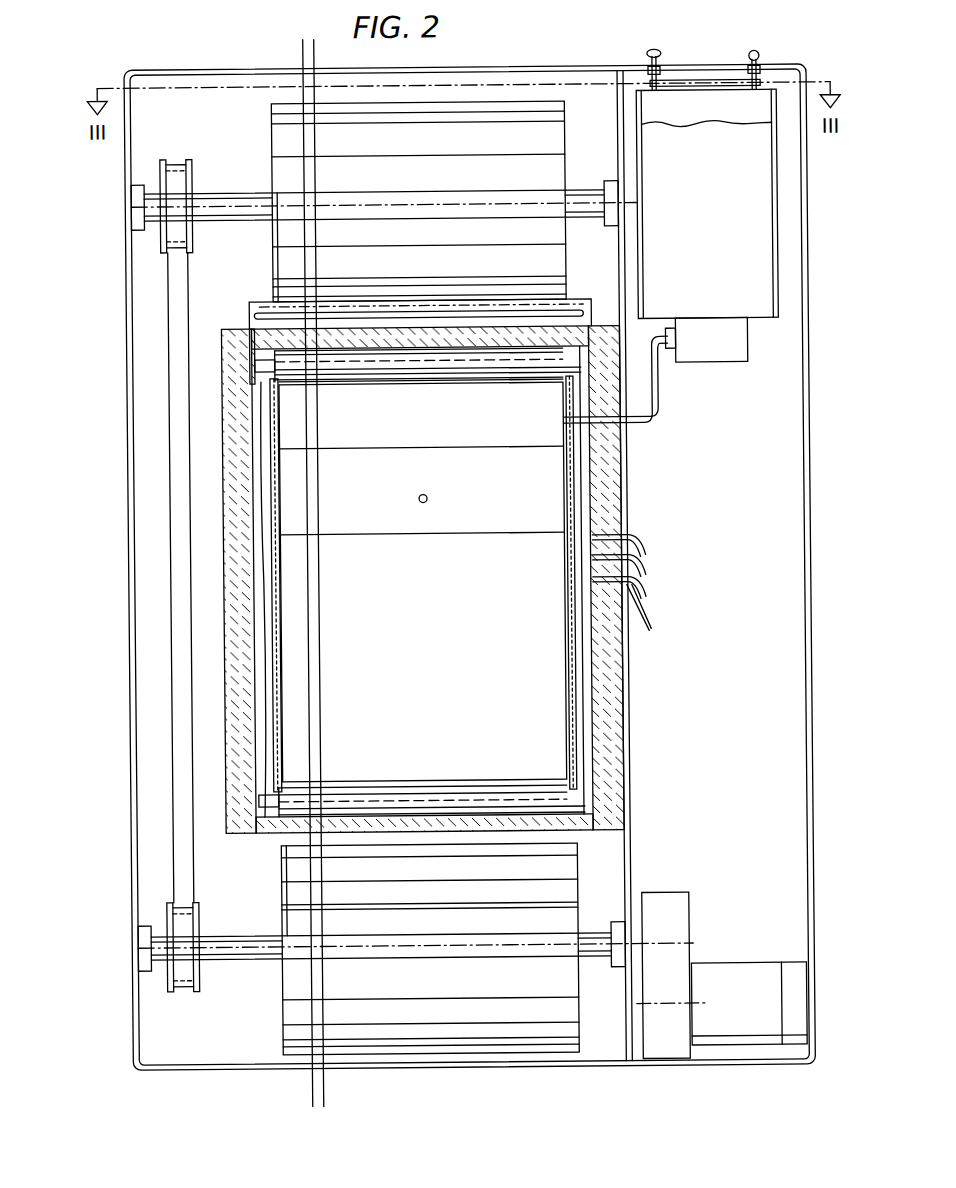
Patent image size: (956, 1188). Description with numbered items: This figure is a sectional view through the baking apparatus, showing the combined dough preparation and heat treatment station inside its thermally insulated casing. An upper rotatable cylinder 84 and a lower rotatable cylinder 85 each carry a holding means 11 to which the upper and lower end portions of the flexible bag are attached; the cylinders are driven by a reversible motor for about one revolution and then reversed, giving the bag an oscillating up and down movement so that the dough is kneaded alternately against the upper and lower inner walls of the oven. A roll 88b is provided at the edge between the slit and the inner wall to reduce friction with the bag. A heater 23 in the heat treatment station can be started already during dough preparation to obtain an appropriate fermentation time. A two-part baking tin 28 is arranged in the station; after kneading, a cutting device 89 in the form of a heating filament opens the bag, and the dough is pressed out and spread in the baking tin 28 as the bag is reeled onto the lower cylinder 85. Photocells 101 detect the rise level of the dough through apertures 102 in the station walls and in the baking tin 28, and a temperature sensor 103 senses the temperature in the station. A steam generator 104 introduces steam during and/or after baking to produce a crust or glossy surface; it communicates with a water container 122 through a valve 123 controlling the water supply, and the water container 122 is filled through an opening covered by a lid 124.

The holding means 11 is at (531, 190).
The heater 23 is at (590, 714).
The baking tin 28 is at (575, 753).
The upper rotatable cylinder 84 is at (490, 130).
The lower rotatable cylinder 85 is at (516, 1015).
The roll 88b is at (390, 356).
The cutting device 89 is at (275, 310).
The photocells 101 is at (653, 625).
The apertures 102 is at (566, 542).
The temperature sensor 103 is at (428, 496).
The steam generator 104 is at (395, 424).
The water container 122 is at (765, 322).
The valve 123 is at (709, 343).
The lid 124 is at (711, 62).